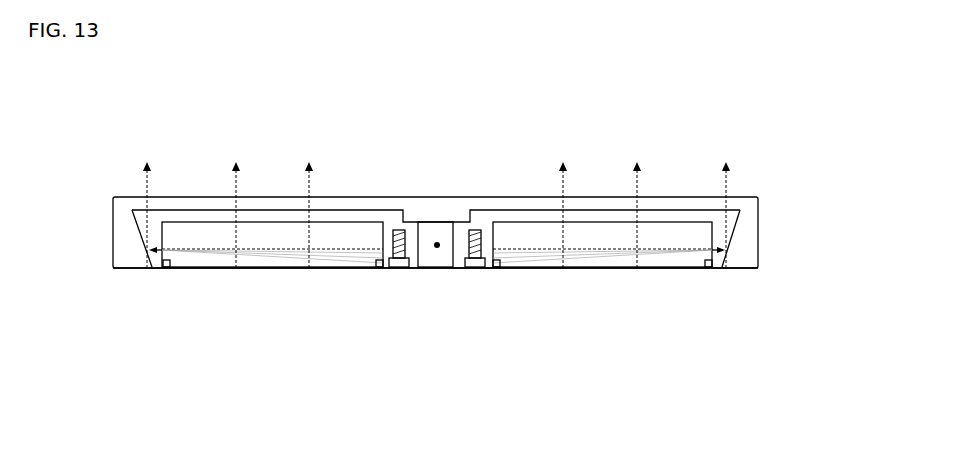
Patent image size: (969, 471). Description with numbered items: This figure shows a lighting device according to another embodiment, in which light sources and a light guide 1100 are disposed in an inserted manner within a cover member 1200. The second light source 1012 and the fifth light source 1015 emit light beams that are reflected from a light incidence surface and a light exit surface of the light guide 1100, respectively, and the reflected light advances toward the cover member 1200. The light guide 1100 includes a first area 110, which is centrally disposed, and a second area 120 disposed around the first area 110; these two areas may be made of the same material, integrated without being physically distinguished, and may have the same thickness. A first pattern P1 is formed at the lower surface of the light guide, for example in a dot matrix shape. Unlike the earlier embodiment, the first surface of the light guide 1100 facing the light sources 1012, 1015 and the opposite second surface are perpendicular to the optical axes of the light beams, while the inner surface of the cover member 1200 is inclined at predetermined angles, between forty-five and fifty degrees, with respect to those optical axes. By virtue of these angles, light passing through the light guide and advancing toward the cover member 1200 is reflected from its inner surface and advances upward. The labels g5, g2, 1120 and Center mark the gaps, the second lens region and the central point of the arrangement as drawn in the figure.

The cover member 1200 is at (758, 180).
The second area 120 is at (264, 292).
The fifth light source 1015 is at (376, 280).
The second lens group L2 1120 is at (631, 288).
The second light source 1012 is at (497, 280).
The gap of first lens group g5 is at (413, 270).
The gap of second lens group g2 is at (460, 270).
The center of lens assembly Center is at (437, 270).
The first area 110 is at (485, 297).
The light guide 1100 is at (668, 382).
The first pattern P1 is at (197, 270).